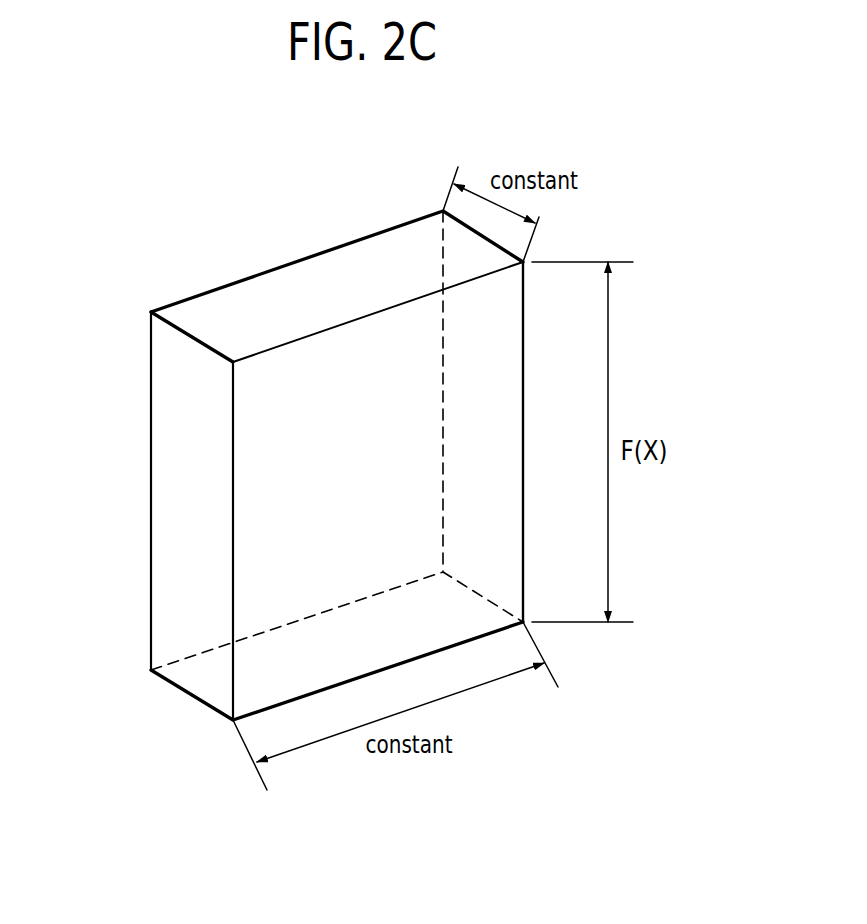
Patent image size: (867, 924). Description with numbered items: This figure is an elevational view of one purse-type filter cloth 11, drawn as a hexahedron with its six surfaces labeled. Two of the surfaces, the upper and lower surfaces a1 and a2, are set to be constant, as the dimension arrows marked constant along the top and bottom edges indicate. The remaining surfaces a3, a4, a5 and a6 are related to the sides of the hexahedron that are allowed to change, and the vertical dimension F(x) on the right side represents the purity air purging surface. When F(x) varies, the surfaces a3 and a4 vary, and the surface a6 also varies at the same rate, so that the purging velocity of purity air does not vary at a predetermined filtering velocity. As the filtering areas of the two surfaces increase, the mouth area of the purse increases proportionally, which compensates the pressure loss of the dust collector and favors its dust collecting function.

The filter cloth 11 is at (173, 592).
The surface a1 of the filter cloth a1 is at (337, 286).
The surface a2 of the filter cloth a2 is at (337, 646).
The surface a3 of the filter cloth a3 is at (378, 491).
The surface a4 of the filter cloth a4 is at (232, 516).
The surface a5 of the filter cloth a5 is at (297, 440).
The surface a6 of the filter cloth a6 is at (483, 416).